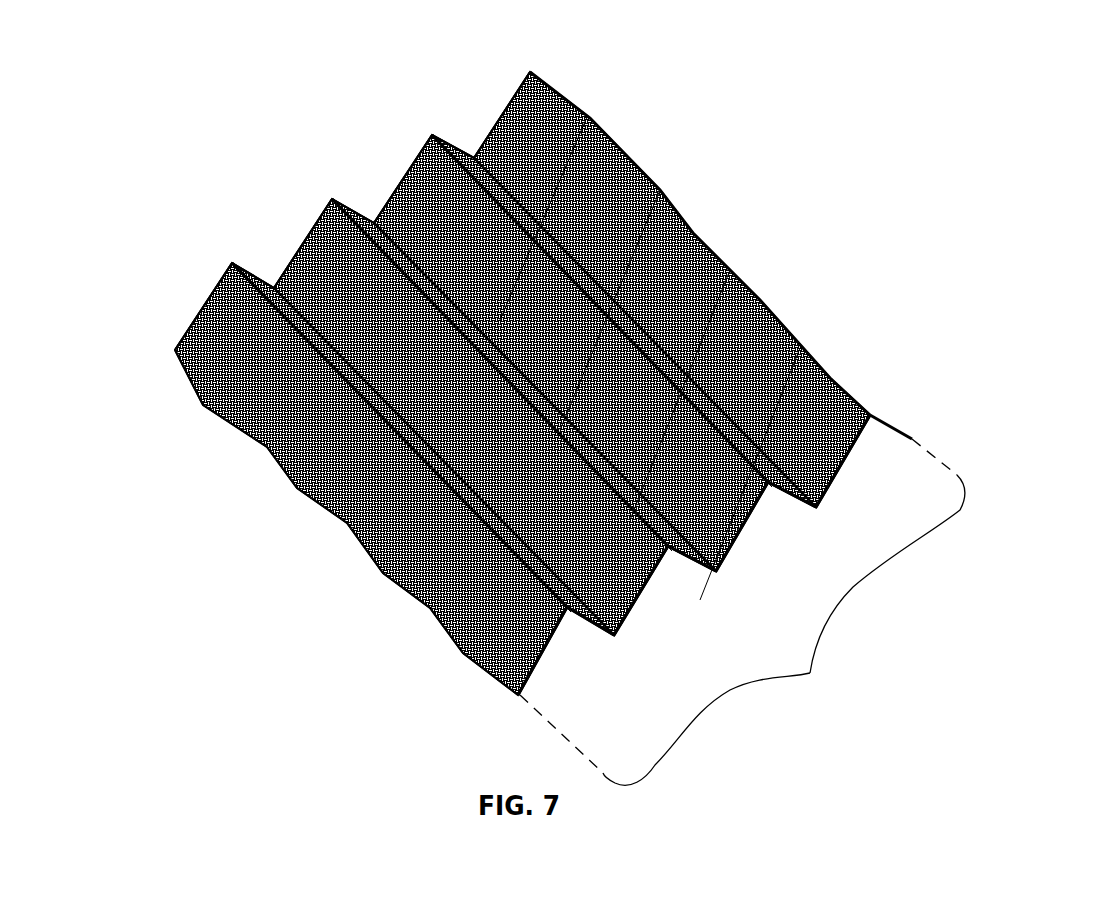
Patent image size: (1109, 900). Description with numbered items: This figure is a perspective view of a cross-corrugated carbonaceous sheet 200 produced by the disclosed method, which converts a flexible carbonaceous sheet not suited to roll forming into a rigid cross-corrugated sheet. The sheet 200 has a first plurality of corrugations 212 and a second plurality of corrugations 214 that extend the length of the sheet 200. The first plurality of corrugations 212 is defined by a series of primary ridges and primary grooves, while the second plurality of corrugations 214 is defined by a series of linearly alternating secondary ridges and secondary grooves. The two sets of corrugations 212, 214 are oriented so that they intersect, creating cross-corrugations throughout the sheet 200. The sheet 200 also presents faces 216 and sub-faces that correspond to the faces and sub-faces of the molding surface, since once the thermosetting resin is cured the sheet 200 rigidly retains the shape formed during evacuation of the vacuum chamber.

The sheet 200 is at (234, 118).
The first plurality of corrugations 212 is at (741, 600).
The second plurality of corrugations 214 is at (201, 409).
The faces 216 is at (491, 117).